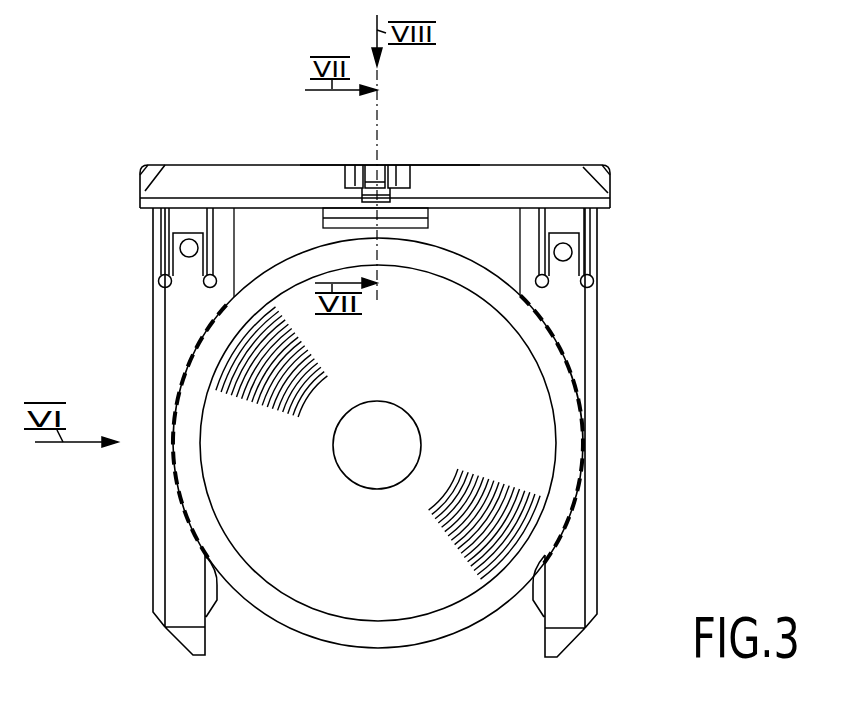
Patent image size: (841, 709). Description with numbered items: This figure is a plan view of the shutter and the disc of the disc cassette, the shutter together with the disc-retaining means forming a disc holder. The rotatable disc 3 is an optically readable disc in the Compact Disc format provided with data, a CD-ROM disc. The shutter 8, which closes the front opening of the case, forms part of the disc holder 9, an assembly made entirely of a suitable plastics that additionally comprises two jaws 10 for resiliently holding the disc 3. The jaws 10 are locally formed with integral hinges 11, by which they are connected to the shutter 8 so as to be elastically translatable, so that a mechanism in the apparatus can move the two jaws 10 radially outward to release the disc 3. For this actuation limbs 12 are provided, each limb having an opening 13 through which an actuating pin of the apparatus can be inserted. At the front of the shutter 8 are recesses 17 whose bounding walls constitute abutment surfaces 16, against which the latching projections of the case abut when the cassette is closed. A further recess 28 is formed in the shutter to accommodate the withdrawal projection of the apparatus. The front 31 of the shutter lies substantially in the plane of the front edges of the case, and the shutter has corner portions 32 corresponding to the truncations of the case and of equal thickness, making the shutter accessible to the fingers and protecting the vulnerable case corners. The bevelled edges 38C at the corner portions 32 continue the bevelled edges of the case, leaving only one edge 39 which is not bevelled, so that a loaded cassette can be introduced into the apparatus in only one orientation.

The disc 3 is at (520, 437).
The shutter 8 is at (528, 186).
The disc holder 9 is at (598, 343).
The jaws 10 is at (180, 589).
The integral hinges 11 is at (597, 216).
The limbs 12 is at (563, 272).
The opening 13 is at (567, 252).
The abutment surfaces 16 is at (352, 165).
The recesses 17 is at (356, 166).
The recess 28 is at (388, 191).
The front of the shutter 31 is at (493, 165).
The corner portions 32 is at (145, 188).
The bevelled edges 38C is at (147, 188).
The edge 39 is at (610, 186).